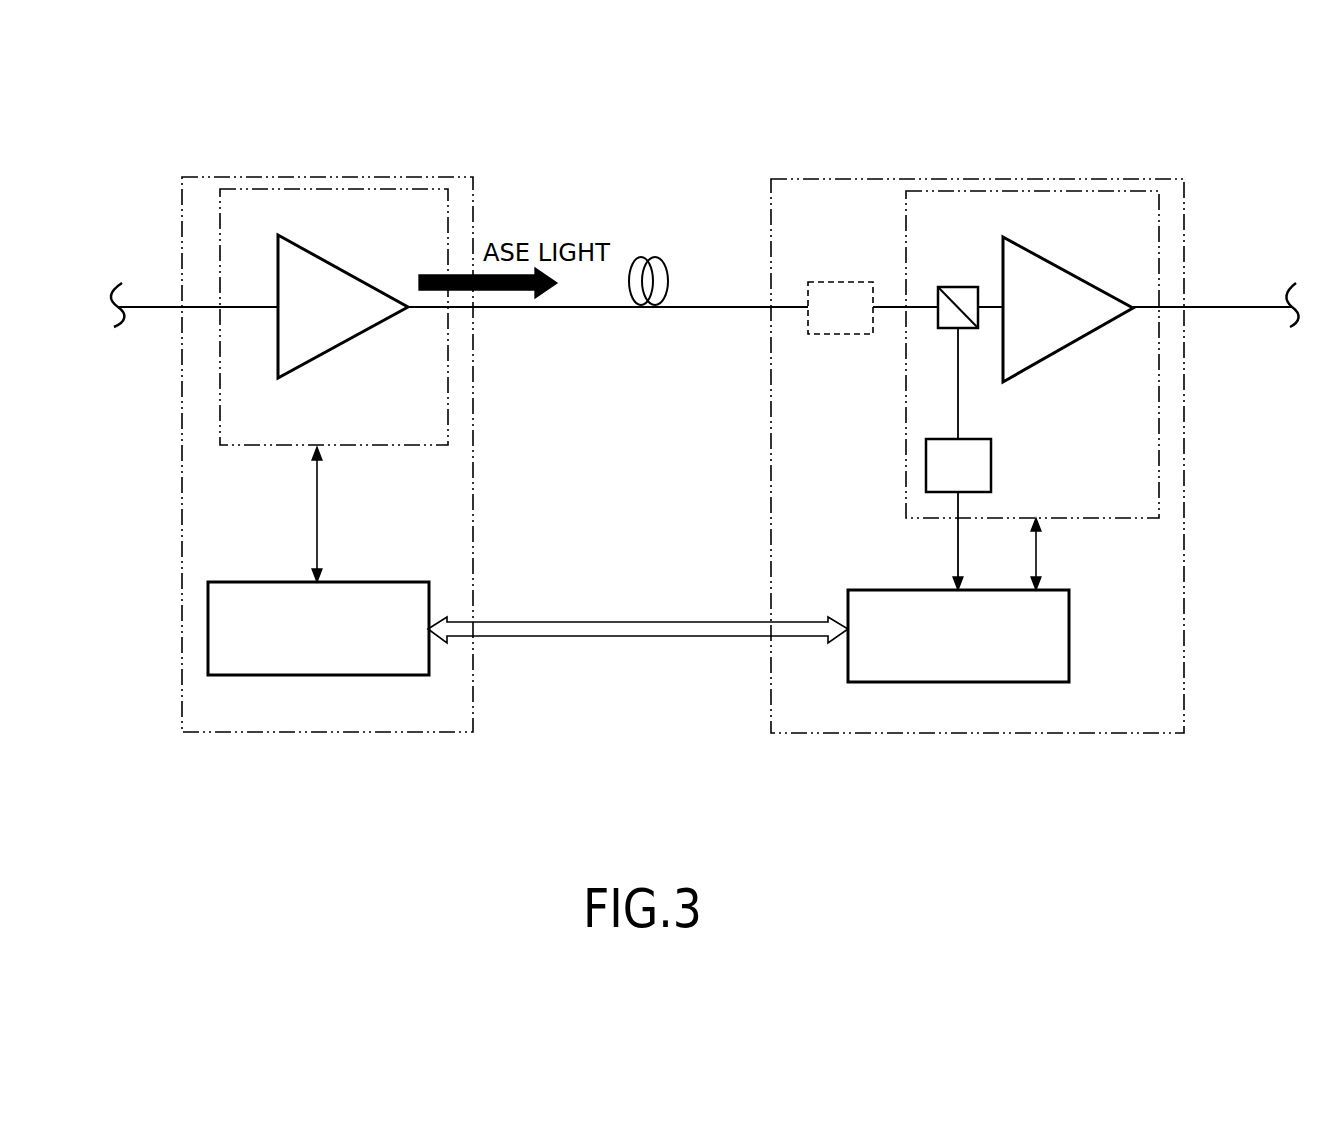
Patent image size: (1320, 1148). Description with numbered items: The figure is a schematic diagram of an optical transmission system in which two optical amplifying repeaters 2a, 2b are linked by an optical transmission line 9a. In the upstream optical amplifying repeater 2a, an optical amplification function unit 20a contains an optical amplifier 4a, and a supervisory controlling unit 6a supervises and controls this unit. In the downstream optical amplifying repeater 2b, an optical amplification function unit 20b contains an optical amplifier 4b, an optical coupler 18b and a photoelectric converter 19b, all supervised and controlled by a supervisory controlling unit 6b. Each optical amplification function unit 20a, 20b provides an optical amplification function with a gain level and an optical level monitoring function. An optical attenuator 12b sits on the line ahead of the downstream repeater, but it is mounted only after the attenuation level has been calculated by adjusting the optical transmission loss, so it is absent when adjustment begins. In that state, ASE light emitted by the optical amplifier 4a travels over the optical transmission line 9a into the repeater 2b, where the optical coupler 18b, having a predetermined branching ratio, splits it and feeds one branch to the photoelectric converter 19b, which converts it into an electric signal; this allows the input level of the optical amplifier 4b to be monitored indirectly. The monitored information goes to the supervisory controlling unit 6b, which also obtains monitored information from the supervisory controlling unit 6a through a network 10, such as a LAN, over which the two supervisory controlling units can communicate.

The optical amplifying repeater 2a is at (410, 177).
The optical amplifying repeater 2b is at (1090, 179).
The optical amplifier 4a is at (318, 254).
The optical amplifier 4b is at (1062, 266).
The supervisory controlling unit 6a is at (370, 582).
The supervisory controlling unit 6b is at (1070, 618).
The optical transmission line 9a is at (592, 308).
The network 10 is at (630, 637).
The optical attenuator 12b is at (822, 282).
The optical coupler 18b is at (960, 287).
The photoelectric converter 19b is at (992, 454).
The optical amplification function unit 20a is at (285, 447).
The optical amplification function unit 20b is at (918, 518).